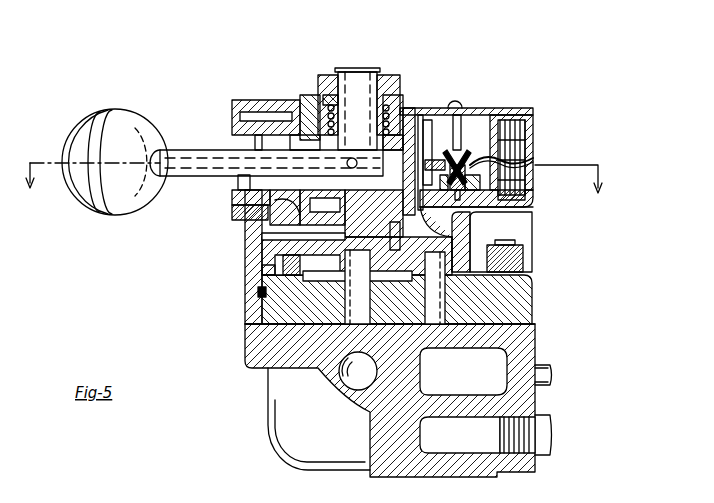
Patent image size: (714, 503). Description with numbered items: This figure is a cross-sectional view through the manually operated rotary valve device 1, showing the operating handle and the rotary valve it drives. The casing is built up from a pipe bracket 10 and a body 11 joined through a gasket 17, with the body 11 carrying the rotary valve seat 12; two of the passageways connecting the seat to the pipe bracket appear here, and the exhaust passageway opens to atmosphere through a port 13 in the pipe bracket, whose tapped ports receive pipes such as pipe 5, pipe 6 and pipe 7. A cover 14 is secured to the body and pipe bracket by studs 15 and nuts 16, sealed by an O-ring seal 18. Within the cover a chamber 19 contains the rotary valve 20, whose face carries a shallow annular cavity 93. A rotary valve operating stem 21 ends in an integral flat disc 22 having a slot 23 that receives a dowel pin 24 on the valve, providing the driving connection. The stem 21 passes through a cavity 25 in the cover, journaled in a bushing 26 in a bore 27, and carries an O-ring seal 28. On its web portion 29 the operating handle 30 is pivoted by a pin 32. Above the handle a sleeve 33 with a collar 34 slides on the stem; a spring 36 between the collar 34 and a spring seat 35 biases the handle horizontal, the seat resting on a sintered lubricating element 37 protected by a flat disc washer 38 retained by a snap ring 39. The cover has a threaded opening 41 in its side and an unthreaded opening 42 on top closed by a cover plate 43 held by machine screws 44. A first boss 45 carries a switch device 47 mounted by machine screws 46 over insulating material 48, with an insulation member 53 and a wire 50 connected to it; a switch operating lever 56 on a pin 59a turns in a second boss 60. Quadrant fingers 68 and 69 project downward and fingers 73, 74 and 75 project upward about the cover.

The rotary valve device 1 is at (542, 288).
The pipe 5 is at (549, 448).
The pipe 6 is at (314, 190).
The pipe 7 is at (549, 378).
The pipe bracket 10 is at (530, 342).
The body 11 is at (530, 312).
The rotary valve seat 12 is at (303, 280).
The port 13 is at (350, 378).
The cover 14 is at (535, 207).
The stud 15 is at (517, 242).
The nut 16 is at (525, 258).
The gasket 17 is at (245, 324).
The O-ring seal 18 is at (256, 291).
The chamber 19 is at (234, 213).
The rotary valve 20 is at (265, 270).
The rotary valve operating stem 21 is at (356, 68).
The flat disc 22 is at (262, 236).
The slot 23 is at (400, 235).
The dowel pin 24 is at (270, 247).
The cavity 25 is at (282, 118).
The bushing 26 is at (470, 228).
The bore 27 is at (335, 188).
The O-ring seal 28 is at (435, 200).
The web portion 29 is at (358, 120).
The operating handle 30 is at (175, 150).
The pin 32 is at (352, 158).
The sleeve 33 is at (408, 112).
The collar 34 is at (318, 103).
The spring seat 35 is at (395, 95).
The spring 36 is at (400, 105).
The lubricating element 37 is at (326, 90).
The flat disc washer 38 is at (388, 75).
The snap ring 39 is at (332, 75).
The threaded opening 41 is at (530, 180).
The unthreaded opening 42 is at (500, 125).
The cover plate 43 is at (534, 112).
The machine screw 44 is at (456, 103).
The first boss 45 is at (530, 196).
The machine screw 46 is at (458, 150).
The switch device 47 is at (466, 160).
The insulating material 48 is at (470, 183).
The insulated covered wire 50 is at (535, 160).
The insulation member 53 is at (468, 170).
The switch operating lever 56 is at (430, 160).
The pin 59a is at (424, 135).
The second boss 60 is at (505, 215).
The finger 68 is at (316, 128).
The finger 69 is at (240, 150).
The finger 73 is at (300, 194).
The finger 74 is at (240, 196).
The finger 75 is at (236, 182).
The shallow annular cavity 93 is at (326, 281).